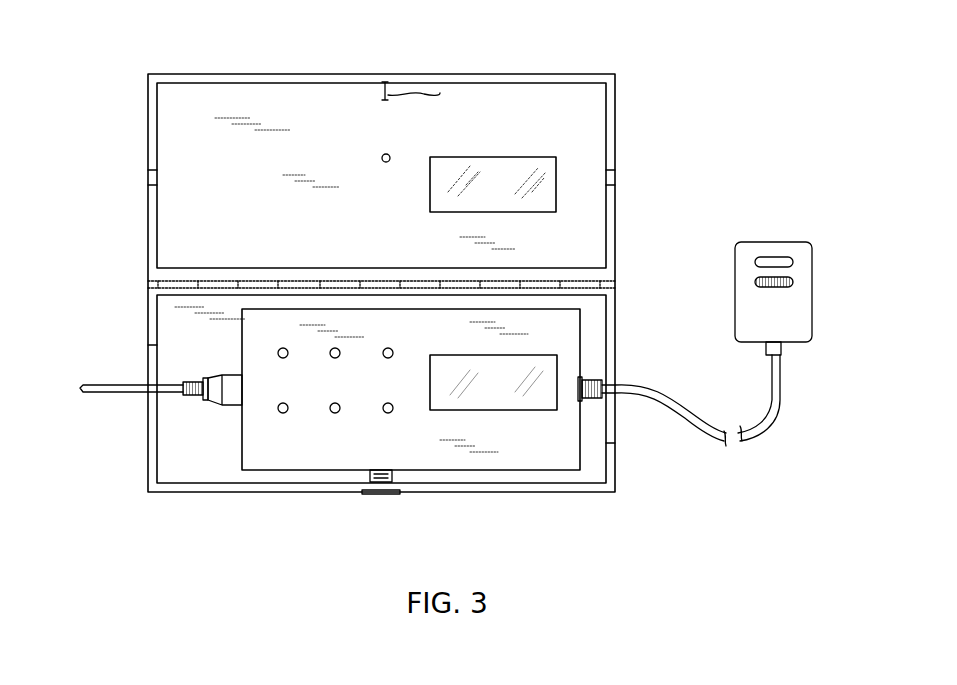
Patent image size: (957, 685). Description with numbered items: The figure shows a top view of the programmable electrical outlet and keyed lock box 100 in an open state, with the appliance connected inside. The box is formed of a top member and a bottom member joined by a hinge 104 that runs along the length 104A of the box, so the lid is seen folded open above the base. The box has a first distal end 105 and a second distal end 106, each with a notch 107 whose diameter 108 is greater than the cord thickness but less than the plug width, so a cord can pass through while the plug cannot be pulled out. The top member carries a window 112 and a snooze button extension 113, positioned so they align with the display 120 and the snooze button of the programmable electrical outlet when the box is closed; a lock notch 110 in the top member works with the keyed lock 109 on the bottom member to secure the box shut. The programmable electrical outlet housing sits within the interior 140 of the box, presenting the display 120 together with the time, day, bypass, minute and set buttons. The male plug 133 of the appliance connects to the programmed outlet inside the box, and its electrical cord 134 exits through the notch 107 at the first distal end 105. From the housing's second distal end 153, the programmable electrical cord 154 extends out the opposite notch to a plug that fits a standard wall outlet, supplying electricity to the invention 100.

The programmable electrical outlet and keyed lock box 100 is at (331, 267).
The notch 107 is at (337, 175).
The hinge 104 is at (333, 285).
The length 104A is at (381, 253).
The snooze button extension 113 is at (351, 98).
The lock notch 110 is at (418, 63).
The window 112 is at (493, 123).
The first distal end 105 is at (115, 332).
The interior 140 is at (374, 428).
The second distal end 106 is at (643, 445).
The electrical cord 134 is at (119, 415).
The diameter 108 is at (119, 411).
The male plug 133 is at (212, 455).
The second distal end 153 is at (455, 389).
The display 120 is at (493, 442).
The keyed lock 109 is at (380, 505).
The programmable electrical cord 154 is at (707, 344).